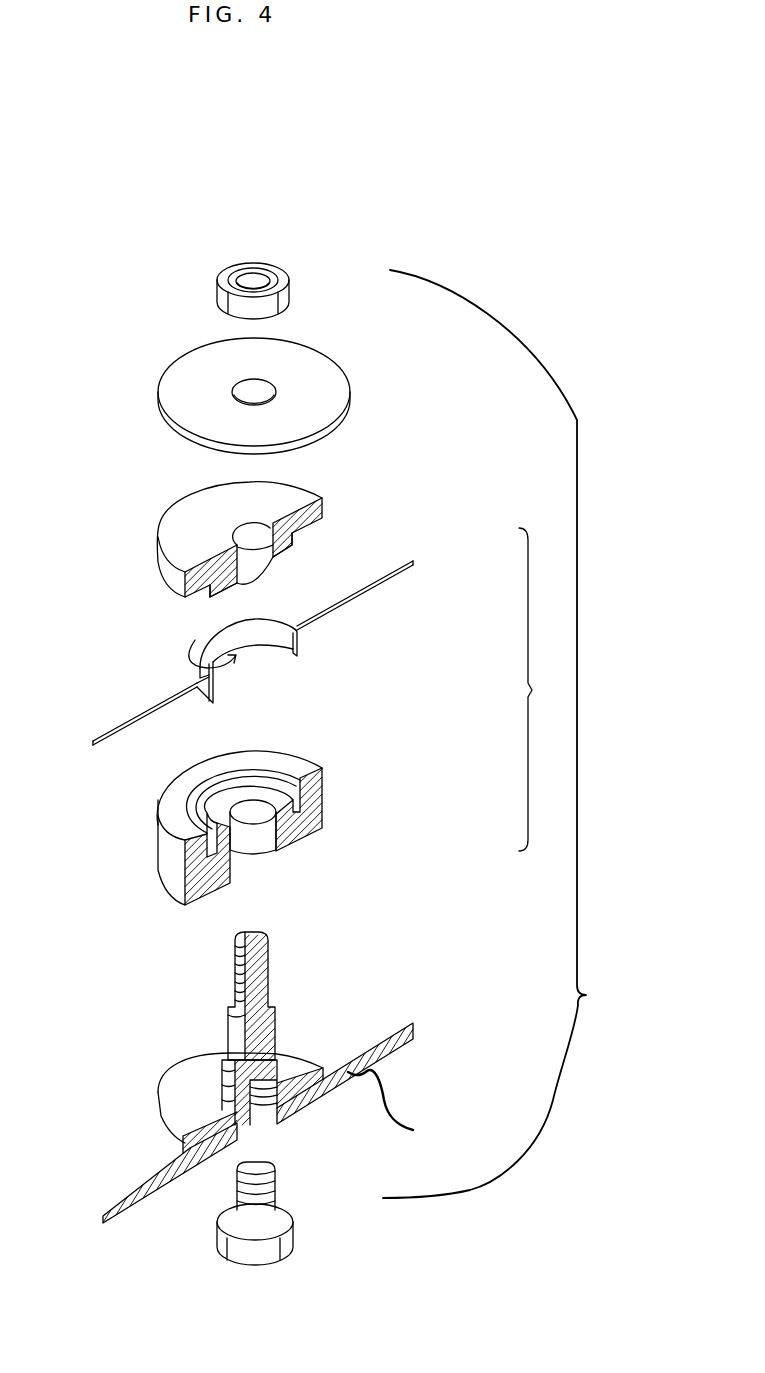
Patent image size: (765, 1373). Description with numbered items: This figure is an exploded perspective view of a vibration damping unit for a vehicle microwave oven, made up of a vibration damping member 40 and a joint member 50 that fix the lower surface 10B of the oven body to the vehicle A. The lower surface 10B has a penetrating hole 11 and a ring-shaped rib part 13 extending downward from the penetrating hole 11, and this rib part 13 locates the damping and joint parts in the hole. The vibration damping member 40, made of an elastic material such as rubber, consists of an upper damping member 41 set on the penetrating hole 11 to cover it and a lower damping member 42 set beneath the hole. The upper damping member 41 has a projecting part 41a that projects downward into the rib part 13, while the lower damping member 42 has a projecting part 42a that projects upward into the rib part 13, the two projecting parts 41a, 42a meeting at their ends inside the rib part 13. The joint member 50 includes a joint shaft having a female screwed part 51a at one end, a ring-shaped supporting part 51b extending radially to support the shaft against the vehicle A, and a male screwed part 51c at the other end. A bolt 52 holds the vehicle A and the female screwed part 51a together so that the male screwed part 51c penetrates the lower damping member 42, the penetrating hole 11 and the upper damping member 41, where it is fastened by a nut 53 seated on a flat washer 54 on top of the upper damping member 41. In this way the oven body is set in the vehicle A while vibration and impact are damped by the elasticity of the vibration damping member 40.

The nut 53 is at (285, 273).
The flat washer 54 is at (322, 370).
The upper damping member 41 is at (322, 514).
The projecting part 41a is at (288, 548).
The lower surface 10B is at (383, 587).
The rib part 13 is at (285, 642).
The penetrating hole 11 is at (207, 638).
The lower damping member 42 is at (322, 826).
The projecting part 42a is at (215, 818).
The vibration damping member 40 is at (545, 689).
The male screwed part 51c is at (237, 978).
The supporting part 51b is at (182, 1097).
The female screwed part 51a is at (173, 1135).
The bolt 52 is at (282, 1193).
The joint member 50 is at (517, 734).
The vehicle A is at (406, 1118).